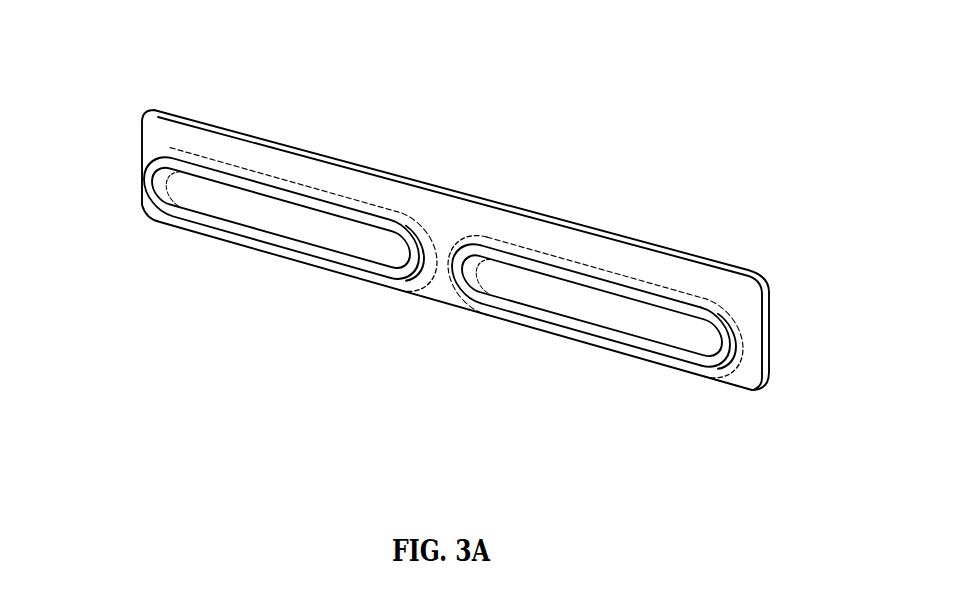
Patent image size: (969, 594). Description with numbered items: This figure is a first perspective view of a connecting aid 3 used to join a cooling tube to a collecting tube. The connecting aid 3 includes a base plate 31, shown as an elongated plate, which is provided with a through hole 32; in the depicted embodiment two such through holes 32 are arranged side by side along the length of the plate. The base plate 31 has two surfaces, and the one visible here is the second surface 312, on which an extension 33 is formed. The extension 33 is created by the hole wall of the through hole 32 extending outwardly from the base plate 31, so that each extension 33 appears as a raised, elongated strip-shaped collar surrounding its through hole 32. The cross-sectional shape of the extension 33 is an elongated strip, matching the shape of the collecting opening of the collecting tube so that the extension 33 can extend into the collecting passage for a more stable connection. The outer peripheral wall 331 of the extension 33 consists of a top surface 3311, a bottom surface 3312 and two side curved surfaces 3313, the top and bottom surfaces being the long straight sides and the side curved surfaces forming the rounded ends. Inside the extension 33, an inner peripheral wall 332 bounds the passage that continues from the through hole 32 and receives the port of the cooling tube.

The connecting aid 3 is at (146, 9).
The base plate 31 is at (398, 209).
The second surface 312 is at (210, 145).
The through hole 32 is at (367, 240).
The extension 33 is at (277, 190).
The outer peripheral wall 331 is at (510, 279).
The top surface 3311 is at (620, 283).
The bottom surface 3312 is at (612, 347).
The side curved surface 3313 is at (733, 340).
The inner peripheral wall 332 is at (150, 215).